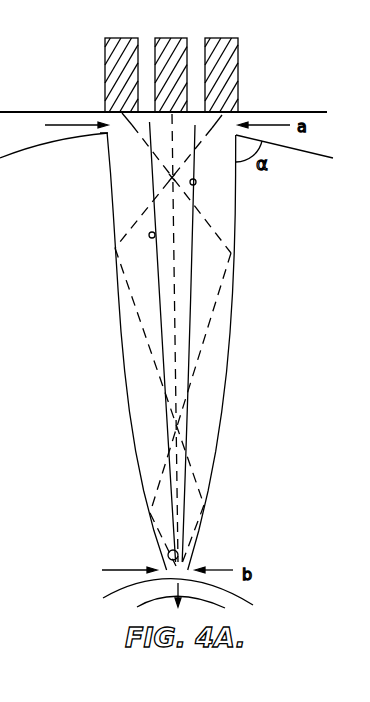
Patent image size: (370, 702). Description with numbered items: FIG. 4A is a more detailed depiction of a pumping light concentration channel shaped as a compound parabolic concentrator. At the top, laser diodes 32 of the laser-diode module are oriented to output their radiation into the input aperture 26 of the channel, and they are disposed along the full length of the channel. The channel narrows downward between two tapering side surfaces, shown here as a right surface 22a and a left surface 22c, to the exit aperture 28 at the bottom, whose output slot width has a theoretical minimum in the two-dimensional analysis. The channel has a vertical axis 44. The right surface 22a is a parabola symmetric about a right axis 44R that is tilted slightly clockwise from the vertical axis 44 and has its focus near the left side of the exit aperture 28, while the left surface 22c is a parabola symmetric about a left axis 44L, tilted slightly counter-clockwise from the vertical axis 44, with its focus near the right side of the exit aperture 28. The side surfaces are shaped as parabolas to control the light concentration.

The laser diodes 32 is at (238, 70).
The input aperture 26 is at (197, 130).
The left wall of duct 22c is at (110, 208).
The right wall of duct 22a is at (233, 270).
The vertical axis 44 is at (175, 330).
The left axis 44L is at (149, 235).
The right axis 44R is at (196, 181).
The exit aperture 28 is at (180, 545).